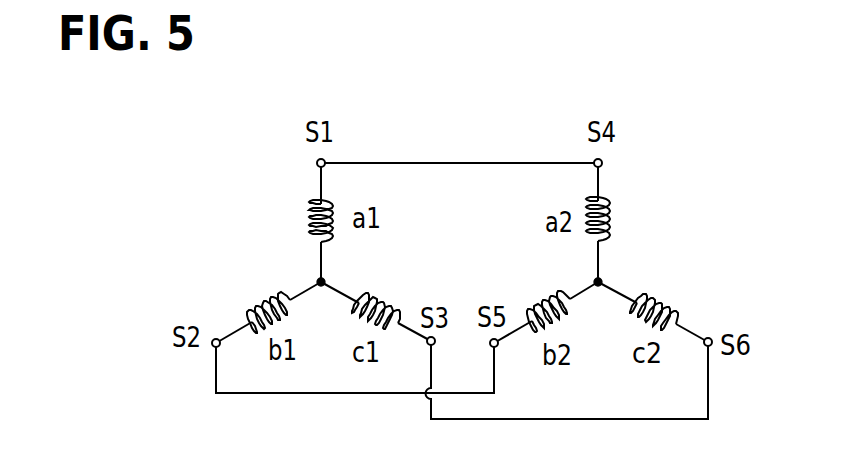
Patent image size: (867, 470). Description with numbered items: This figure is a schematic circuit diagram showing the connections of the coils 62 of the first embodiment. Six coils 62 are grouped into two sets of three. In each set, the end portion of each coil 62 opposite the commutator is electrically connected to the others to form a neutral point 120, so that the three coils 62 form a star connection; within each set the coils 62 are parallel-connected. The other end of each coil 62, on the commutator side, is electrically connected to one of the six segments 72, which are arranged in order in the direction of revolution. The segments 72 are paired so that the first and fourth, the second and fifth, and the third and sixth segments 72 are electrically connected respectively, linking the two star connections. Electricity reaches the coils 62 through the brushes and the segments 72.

The segment 72 is at (316, 163).
The coil 62 is at (310, 217).
The neutral point 120 is at (320, 279).